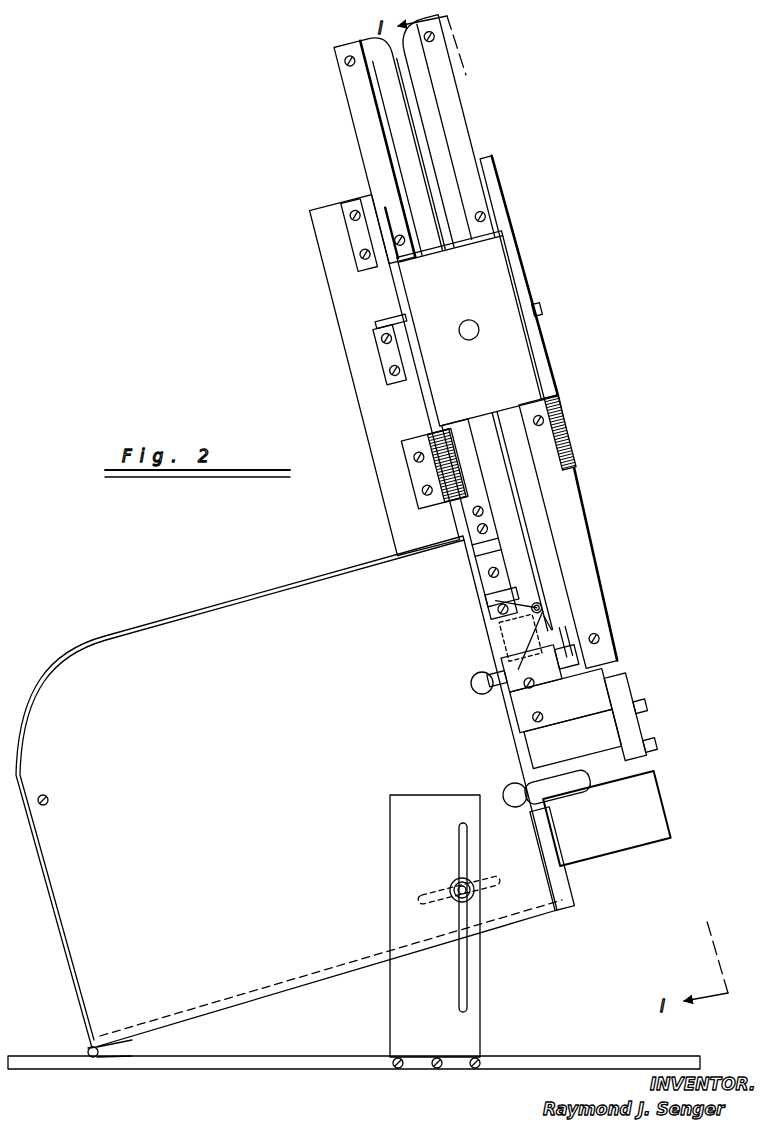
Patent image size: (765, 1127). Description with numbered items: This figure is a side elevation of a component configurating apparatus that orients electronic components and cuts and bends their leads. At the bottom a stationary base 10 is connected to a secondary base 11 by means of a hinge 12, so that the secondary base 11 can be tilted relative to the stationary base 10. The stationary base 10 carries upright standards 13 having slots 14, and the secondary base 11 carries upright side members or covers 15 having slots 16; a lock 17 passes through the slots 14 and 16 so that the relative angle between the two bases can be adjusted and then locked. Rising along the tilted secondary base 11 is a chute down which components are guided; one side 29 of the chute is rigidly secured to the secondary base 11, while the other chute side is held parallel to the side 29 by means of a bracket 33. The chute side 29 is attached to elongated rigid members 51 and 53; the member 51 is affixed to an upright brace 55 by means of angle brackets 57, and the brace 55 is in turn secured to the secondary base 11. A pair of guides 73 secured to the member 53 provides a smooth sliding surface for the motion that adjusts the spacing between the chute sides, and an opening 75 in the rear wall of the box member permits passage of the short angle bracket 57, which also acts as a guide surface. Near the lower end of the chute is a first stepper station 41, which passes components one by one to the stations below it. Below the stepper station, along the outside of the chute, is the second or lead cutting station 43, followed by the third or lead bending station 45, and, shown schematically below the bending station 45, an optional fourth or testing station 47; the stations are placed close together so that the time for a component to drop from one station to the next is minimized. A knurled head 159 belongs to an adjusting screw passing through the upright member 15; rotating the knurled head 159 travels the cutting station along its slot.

The stationary base 10 is at (245, 1072).
The secondary base 11 is at (335, 976).
The hinge 12 is at (112, 1047).
The upright standards 13 is at (478, 1036).
The slots 14 is at (463, 852).
The upright side members or covers 15 is at (242, 754).
The slots 16 is at (495, 878).
The lock 17 is at (455, 882).
The side of the chute 29 is at (433, 165).
The bracket 33 is at (536, 279).
The first stepper station 41 is at (560, 622).
The lead cutting station 43 is at (578, 670).
The lead bending station 45 is at (647, 708).
The testing station 47 is at (678, 806).
The elongated rigid member 51 is at (362, 146).
The elongated rigid member 53 is at (462, 107).
The upright brace 55 is at (383, 440).
The angle brackets 57 is at (352, 237).
The guides 73 is at (497, 196).
The opening 75 is at (406, 322).
The knurled head 159 is at (472, 682).